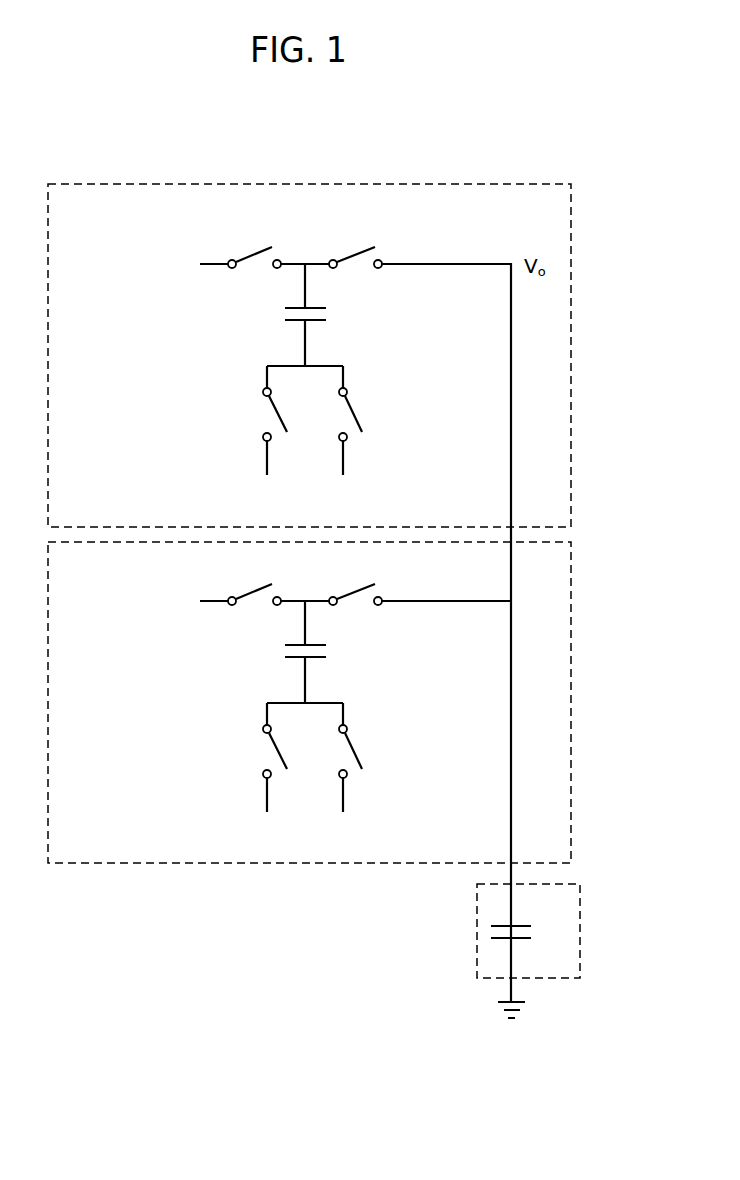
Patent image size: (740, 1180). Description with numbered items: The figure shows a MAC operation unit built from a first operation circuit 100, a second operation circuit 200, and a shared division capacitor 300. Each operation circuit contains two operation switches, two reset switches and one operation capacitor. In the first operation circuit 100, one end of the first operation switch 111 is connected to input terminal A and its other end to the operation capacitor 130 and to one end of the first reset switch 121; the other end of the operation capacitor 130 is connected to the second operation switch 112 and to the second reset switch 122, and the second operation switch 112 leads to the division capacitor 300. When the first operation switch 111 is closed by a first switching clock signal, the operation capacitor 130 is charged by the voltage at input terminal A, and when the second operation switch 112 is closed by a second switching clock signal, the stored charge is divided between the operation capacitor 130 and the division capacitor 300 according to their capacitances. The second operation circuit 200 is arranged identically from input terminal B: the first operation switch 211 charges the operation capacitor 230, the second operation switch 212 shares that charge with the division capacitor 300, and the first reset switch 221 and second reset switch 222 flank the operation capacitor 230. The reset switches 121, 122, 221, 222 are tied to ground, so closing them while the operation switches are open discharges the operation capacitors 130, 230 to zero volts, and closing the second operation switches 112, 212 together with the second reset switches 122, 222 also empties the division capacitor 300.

The first operation circuit 100 is at (572, 372).
The first operation switch 111 is at (277, 413).
The second operation switch 112 is at (351, 259).
The first reset switch 121 is at (346, 397).
The second reset switch 122 is at (253, 254).
The operation capacitor 130 is at (295, 325).
The second operation circuit 200 is at (572, 672).
The first operation switch 211 is at (239, 747).
The second operation switch 212 is at (349, 619).
The first reset switch 221 is at (368, 730).
The second reset switch 222 is at (252, 616).
The operation capacitor 230 is at (269, 652).
The division capacitor 300 is at (582, 905).